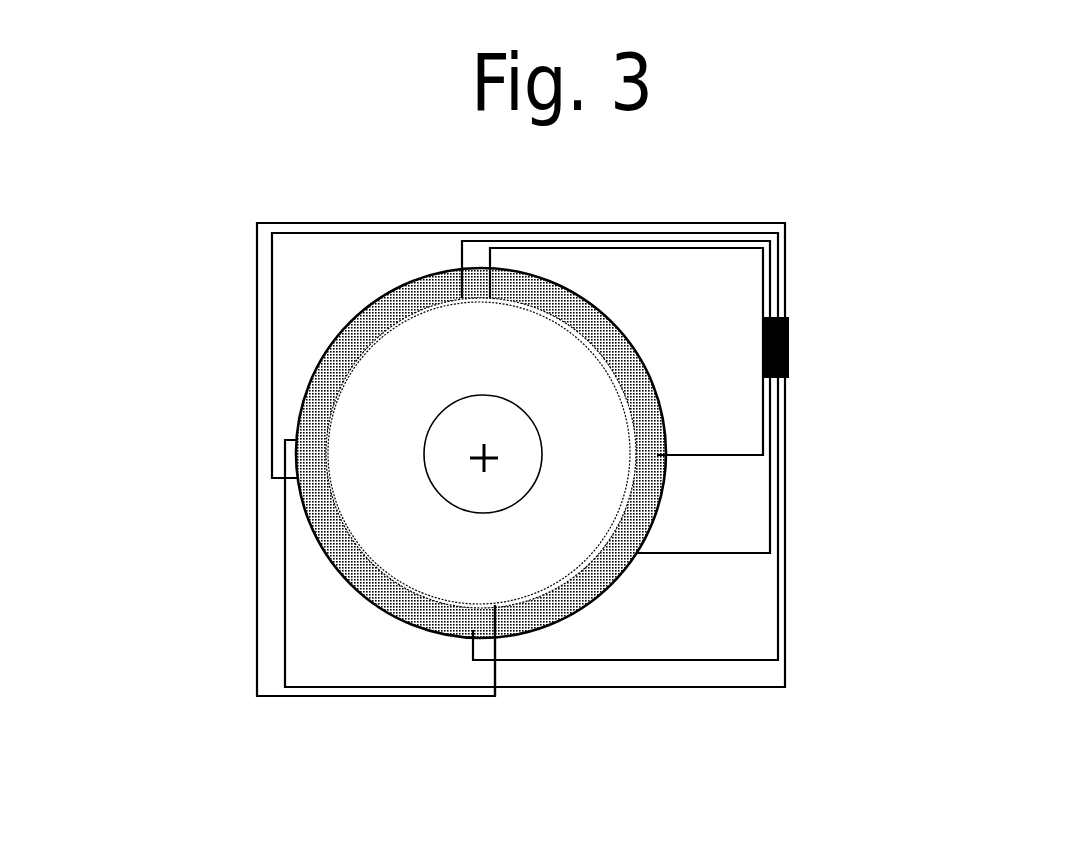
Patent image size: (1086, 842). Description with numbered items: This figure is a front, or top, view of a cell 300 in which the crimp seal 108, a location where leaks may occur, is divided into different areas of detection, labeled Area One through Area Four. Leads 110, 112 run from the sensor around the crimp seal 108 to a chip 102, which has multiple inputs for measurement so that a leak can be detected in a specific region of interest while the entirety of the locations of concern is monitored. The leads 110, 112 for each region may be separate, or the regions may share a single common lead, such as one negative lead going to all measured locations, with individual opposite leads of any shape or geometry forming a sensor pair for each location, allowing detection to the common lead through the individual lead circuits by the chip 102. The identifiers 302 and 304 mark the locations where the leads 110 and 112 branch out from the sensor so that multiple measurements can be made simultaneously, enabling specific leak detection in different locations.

The cell 300 is at (972, 160).
The lead branch location 302 is at (808, 270).
The lead branch location 304 is at (812, 613).
The chip 102 is at (800, 337).
The crimp seal 108 is at (317, 405).
The lead 110 is at (416, 623).
The lead 112 is at (405, 322).